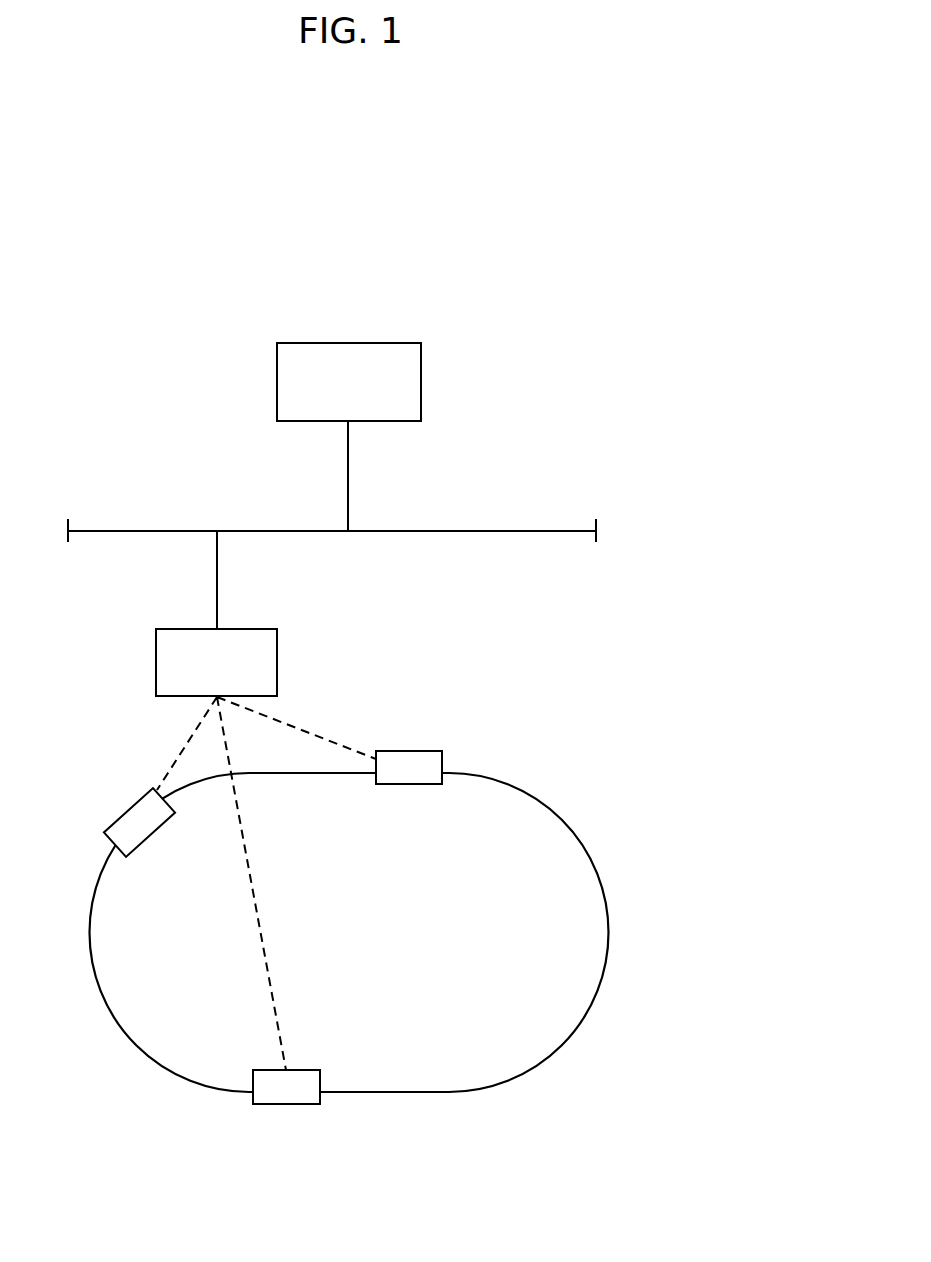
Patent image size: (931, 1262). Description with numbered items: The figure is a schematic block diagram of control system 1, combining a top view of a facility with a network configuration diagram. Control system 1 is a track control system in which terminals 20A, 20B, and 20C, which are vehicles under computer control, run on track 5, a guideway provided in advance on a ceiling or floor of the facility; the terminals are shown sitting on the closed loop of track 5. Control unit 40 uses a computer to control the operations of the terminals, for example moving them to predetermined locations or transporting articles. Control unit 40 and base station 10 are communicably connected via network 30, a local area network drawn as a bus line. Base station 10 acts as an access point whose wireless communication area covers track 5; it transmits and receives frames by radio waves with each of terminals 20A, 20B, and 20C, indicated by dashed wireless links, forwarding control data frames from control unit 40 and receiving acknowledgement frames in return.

The control system 1 is at (578, 321).
The track 5 is at (579, 840).
The base station 10 is at (230, 629).
The terminal 20A is at (127, 808).
The terminal 20B is at (300, 1070).
The terminal 20C is at (420, 751).
The network 30 is at (483, 531).
The control unit 40 is at (382, 343).